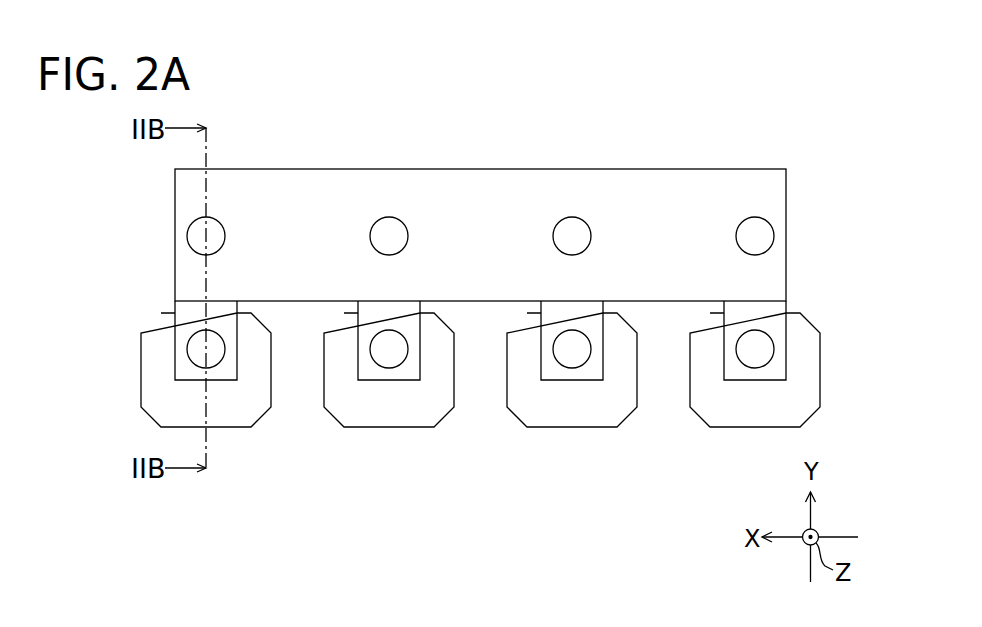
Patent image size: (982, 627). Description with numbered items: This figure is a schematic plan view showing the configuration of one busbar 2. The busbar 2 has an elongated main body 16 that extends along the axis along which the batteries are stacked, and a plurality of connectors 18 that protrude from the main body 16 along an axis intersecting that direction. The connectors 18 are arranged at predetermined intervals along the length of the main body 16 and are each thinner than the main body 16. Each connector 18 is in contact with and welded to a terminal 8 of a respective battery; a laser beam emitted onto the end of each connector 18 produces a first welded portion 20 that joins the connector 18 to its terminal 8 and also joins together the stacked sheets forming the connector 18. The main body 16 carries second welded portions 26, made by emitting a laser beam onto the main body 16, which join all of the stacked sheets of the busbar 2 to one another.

The busbar 2 is at (530, 238).
The second welded portions 26 is at (758, 217).
The main body 16 is at (774, 240).
The connectors 18 is at (758, 312).
The first welded portions 20 is at (770, 332).
The terminals 8 is at (810, 363).